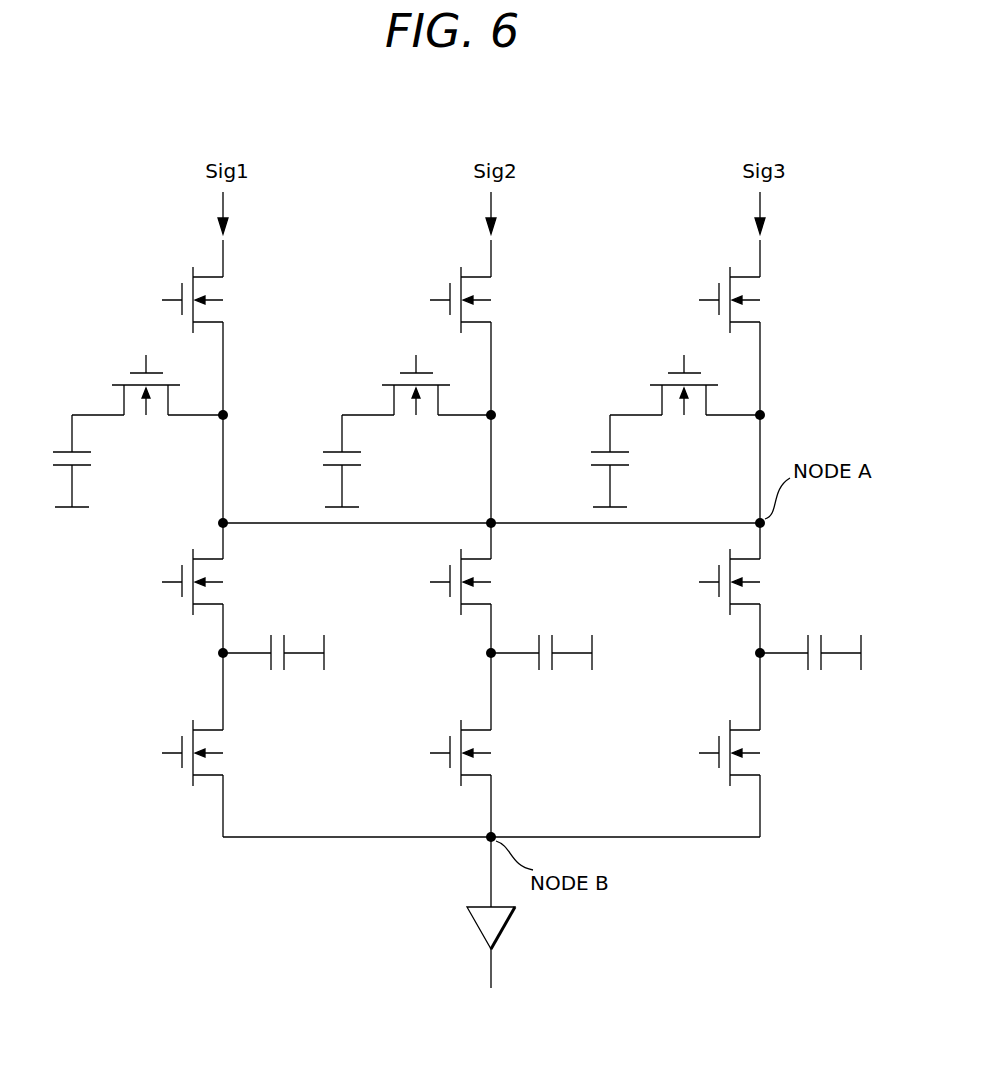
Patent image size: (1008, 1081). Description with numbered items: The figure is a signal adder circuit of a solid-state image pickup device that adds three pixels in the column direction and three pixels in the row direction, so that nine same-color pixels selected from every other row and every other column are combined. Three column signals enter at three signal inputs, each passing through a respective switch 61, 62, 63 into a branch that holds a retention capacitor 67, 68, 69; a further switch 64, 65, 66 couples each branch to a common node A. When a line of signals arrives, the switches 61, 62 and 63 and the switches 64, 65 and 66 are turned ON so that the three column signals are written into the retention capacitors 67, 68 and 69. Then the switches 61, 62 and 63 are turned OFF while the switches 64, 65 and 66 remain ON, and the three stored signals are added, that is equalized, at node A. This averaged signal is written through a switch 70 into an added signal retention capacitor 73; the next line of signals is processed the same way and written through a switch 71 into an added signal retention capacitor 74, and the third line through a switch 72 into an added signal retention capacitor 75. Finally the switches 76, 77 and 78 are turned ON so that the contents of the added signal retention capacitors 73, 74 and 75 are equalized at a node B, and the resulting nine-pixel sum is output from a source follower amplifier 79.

The switch 61 is at (180, 292).
The switch 62 is at (448, 292).
The switch 63 is at (717, 292).
The switch 64 is at (141, 371).
The switch 65 is at (411, 371).
The switch 66 is at (679, 371).
The retention capacitor 67 is at (66, 450).
The retention capacitor 68 is at (336, 450).
The retention capacitor 69 is at (604, 450).
The switch 70 is at (180, 574).
The switch 71 is at (448, 574).
The switch 72 is at (717, 574).
The added signal retention capacitor 73 is at (287, 667).
The added signal retention capacitor 74 is at (555, 667).
The added signal retention capacitor 75 is at (824, 667).
The switch 76 is at (180, 745).
The switch 77 is at (448, 745).
The switch 78 is at (717, 745).
The source follower amplifier 79 is at (509, 929).